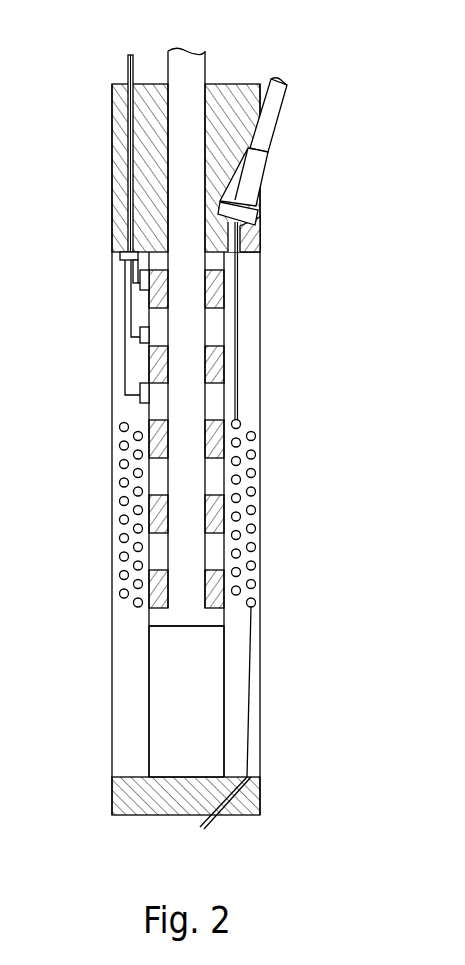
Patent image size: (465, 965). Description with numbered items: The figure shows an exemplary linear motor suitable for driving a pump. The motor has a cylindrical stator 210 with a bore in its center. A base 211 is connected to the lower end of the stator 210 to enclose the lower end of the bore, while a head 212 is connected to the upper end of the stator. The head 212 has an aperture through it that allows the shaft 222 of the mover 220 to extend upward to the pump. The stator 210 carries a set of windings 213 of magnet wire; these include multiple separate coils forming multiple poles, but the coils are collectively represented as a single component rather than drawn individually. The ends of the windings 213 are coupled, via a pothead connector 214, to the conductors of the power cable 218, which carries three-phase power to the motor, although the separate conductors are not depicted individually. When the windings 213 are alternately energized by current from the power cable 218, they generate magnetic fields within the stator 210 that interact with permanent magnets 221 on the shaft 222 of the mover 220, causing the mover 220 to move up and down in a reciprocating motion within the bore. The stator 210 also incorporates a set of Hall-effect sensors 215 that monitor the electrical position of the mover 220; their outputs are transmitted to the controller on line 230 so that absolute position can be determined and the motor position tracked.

The cylindrical stator 210 is at (112, 372).
The base 211 is at (261, 795).
The head 212 is at (112, 138).
The windings 213 is at (270, 420).
The pothead connector 214 is at (258, 192).
The Hall-effect sensors 215 is at (136, 289).
The power cable 218 is at (284, 104).
The mover 220 is at (163, 633).
The permanent magnets 221 is at (226, 362).
The shaft 222 is at (147, 324).
The line 230 is at (128, 72).